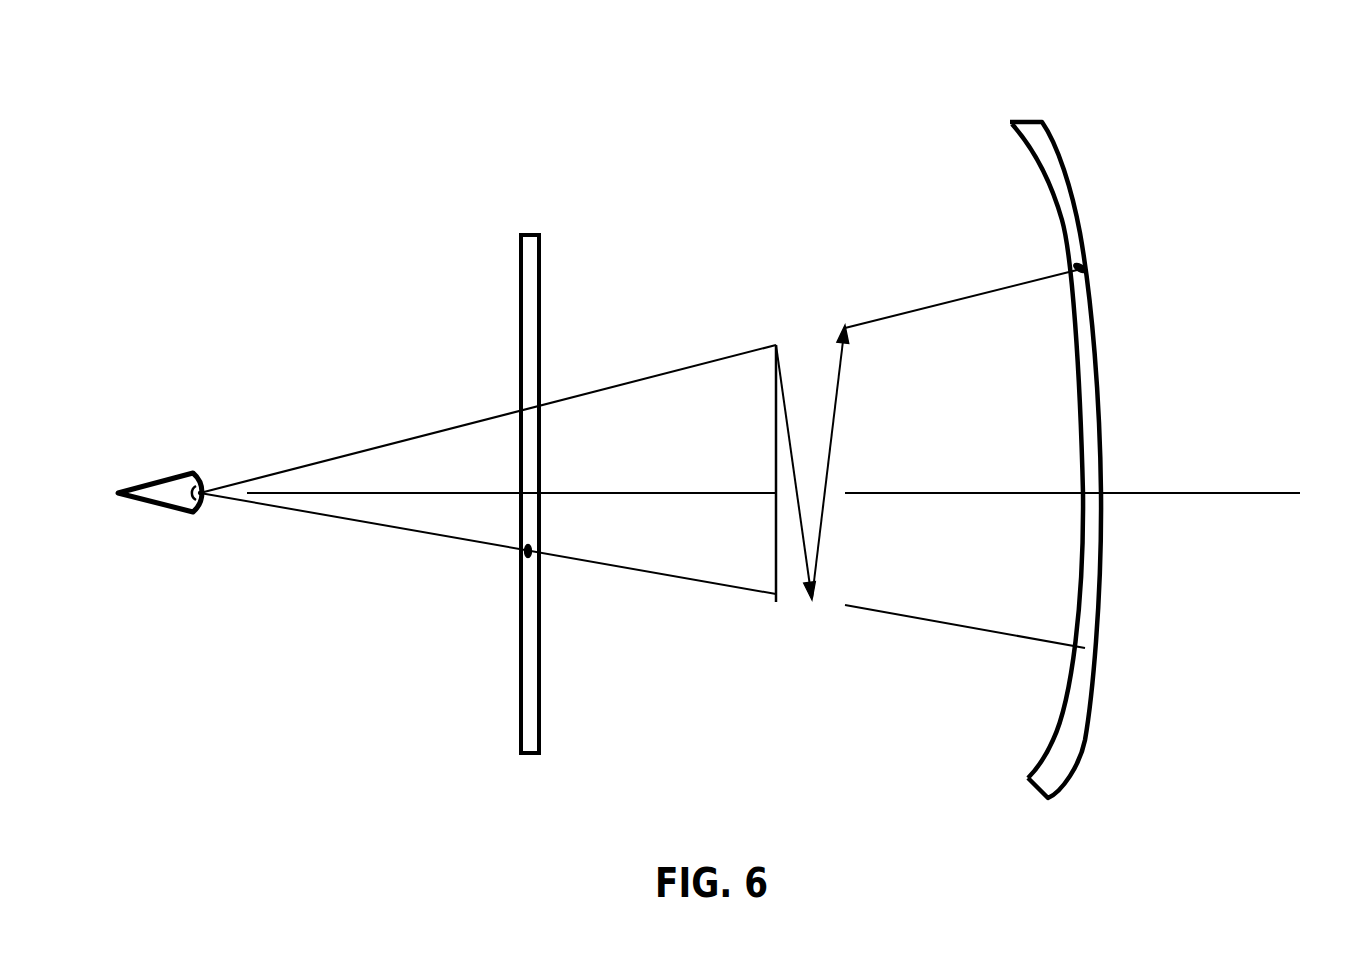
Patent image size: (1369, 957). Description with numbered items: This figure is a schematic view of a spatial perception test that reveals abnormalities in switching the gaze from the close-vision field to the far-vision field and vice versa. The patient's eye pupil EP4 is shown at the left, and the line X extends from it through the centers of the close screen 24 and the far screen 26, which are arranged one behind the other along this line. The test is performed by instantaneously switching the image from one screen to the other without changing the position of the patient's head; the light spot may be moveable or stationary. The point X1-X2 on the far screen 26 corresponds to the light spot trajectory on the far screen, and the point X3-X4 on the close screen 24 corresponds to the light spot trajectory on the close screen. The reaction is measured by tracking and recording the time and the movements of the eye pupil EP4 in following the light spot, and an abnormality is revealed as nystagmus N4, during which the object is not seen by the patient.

The eye pupil EP4 is at (198, 477).
The close screen 24 is at (520, 233).
The far screen 26 is at (1062, 222).
The nystagmus N4 is at (765, 621).
The point X1-X2 is at (1088, 262).
The point X3-X4 is at (522, 558).
The line X- X is at (787, 493).